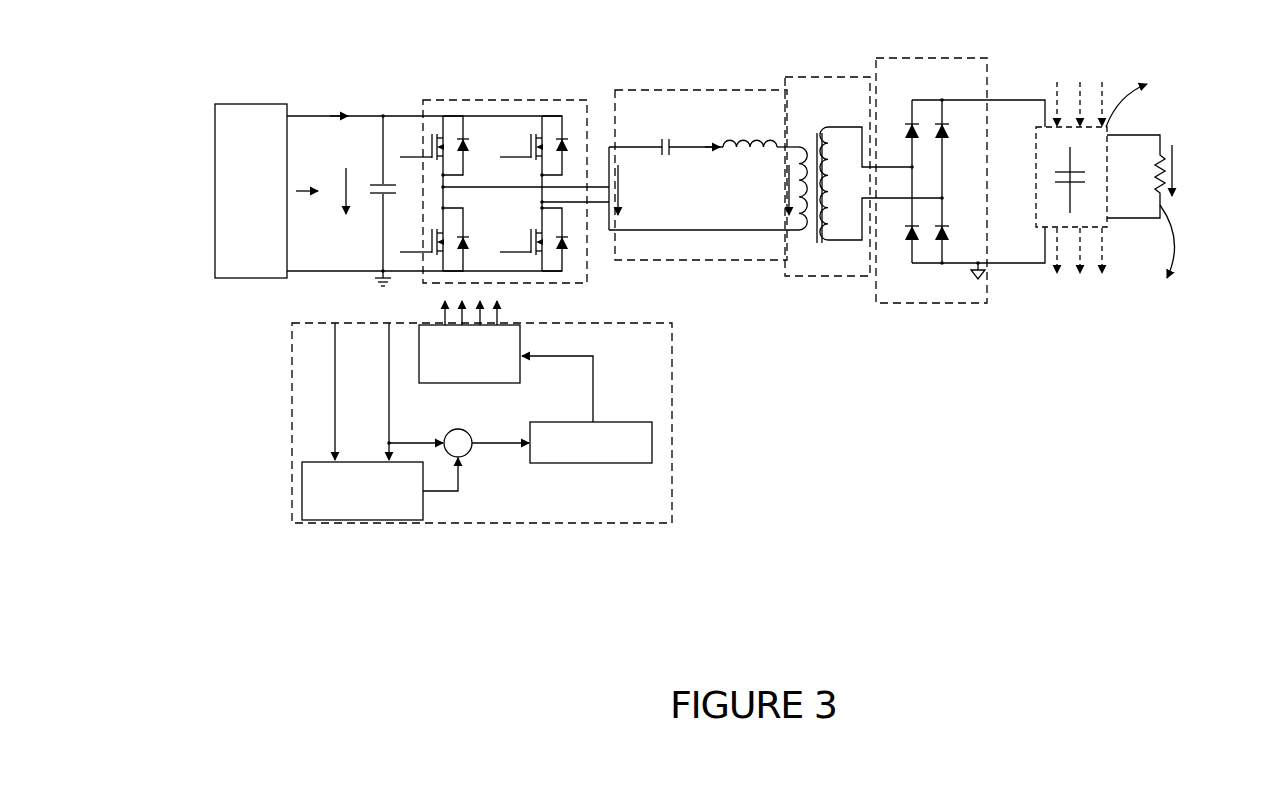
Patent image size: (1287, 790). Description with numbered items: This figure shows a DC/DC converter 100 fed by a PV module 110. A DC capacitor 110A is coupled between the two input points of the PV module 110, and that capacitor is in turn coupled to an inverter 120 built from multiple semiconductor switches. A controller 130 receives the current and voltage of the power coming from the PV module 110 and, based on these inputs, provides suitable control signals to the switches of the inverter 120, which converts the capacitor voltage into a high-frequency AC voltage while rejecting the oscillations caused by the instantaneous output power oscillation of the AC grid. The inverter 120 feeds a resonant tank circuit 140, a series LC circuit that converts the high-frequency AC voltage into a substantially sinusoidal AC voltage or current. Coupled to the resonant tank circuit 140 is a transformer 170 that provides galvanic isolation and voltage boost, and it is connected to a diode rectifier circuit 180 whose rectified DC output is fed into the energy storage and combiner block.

The DC/DC converter 100 is at (254, 319).
The PV module 110 is at (261, 100).
The DC capacitor 110A is at (380, 185).
The inverter 120 is at (494, 99).
The controller 130 is at (676, 406).
The resonant tank circuit 140 is at (689, 89).
The transformer 170 is at (818, 283).
The rectifier circuit 180 is at (944, 309).